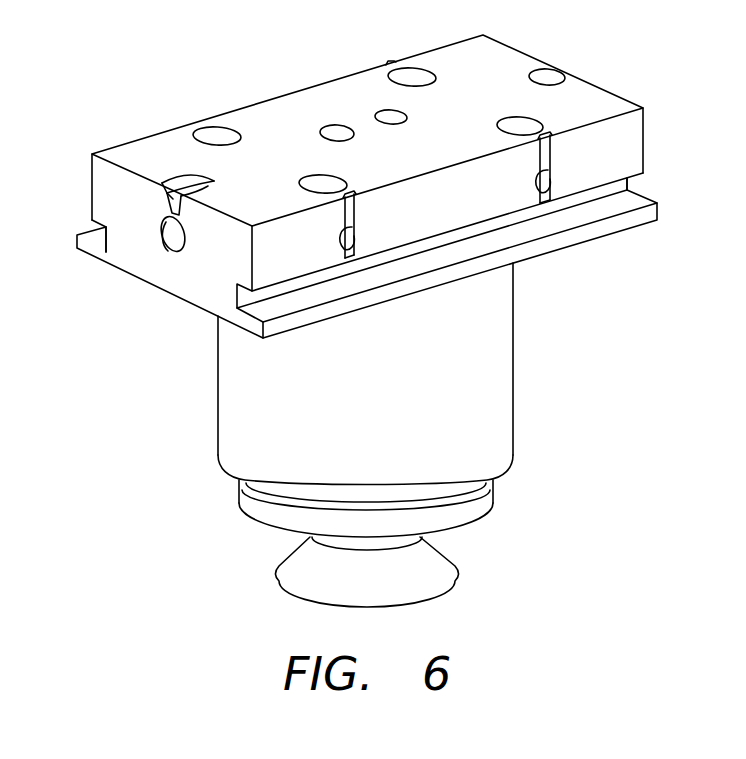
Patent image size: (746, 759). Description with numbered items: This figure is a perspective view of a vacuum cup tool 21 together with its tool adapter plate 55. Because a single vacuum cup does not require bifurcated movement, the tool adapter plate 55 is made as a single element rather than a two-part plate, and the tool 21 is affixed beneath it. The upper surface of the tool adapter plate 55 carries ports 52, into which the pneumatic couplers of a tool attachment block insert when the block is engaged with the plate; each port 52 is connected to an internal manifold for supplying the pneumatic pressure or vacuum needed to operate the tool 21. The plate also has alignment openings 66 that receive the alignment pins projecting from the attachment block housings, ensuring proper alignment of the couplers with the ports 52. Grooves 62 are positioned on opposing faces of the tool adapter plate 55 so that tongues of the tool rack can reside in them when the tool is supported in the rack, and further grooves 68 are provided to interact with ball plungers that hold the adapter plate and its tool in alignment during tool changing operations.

The tool 21 is at (497, 363).
The ports 52 is at (194, 130).
The tool adapter plate 55 is at (157, 272).
The grooves 62 is at (97, 233).
The alignment openings 66 is at (382, 110).
The grooves 68 is at (357, 213).